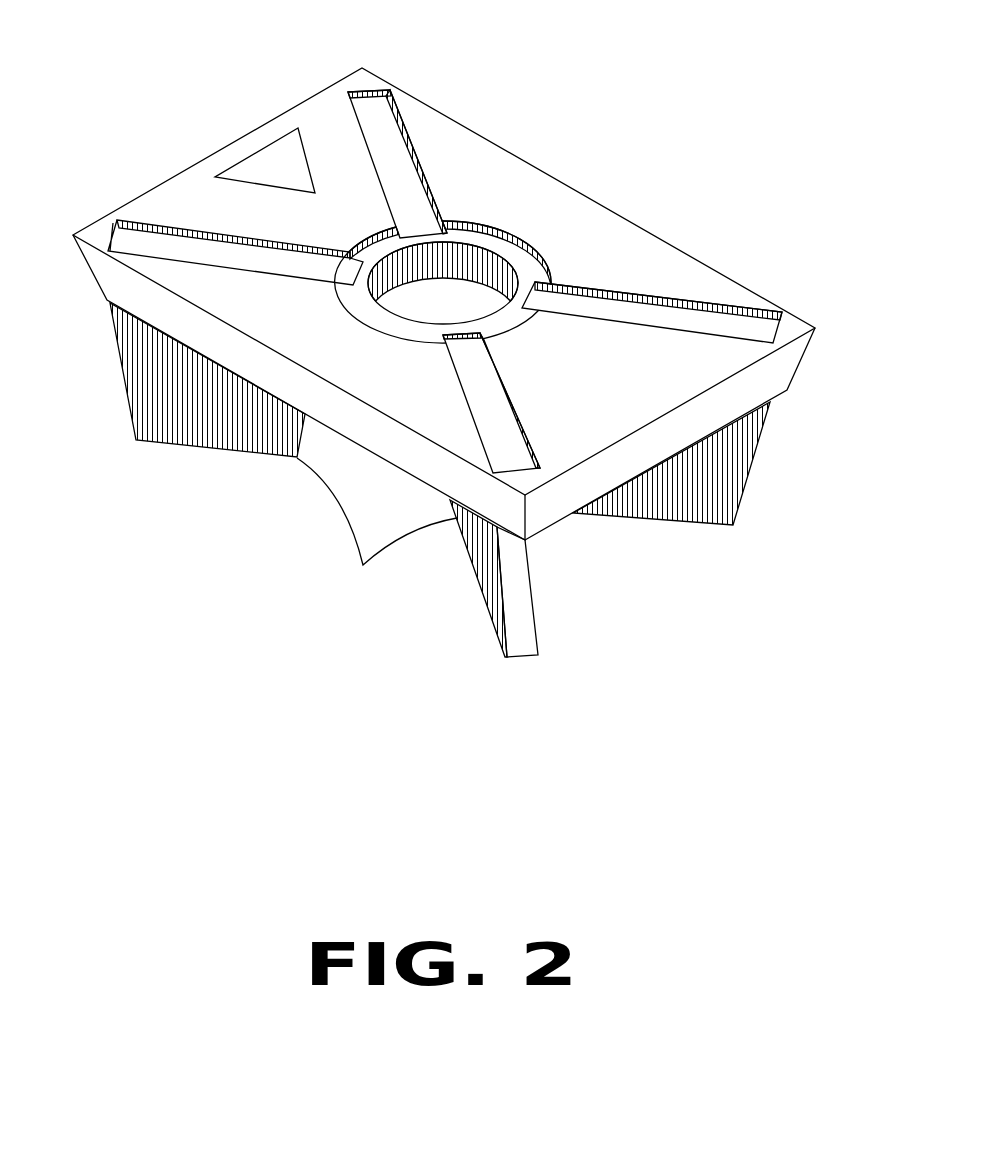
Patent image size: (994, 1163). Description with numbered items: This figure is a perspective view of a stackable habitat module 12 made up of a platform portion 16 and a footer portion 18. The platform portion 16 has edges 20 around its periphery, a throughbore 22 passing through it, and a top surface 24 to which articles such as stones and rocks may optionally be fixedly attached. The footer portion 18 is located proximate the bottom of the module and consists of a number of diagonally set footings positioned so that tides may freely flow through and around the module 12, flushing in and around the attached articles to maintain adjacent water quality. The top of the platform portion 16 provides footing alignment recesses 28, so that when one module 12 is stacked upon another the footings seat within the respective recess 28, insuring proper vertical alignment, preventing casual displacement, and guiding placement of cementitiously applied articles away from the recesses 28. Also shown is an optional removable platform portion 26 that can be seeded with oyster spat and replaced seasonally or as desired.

The stackable habitat module 12 is at (441, 331).
The platform portion 16 is at (107, 270).
The footer portion 18 is at (377, 531).
The edges 20 is at (230, 144).
The throughbore 22 is at (470, 262).
The top surface 24 is at (444, 322).
The removable platform portion 26 is at (283, 157).
The footing alignment recesses 28 is at (503, 410).